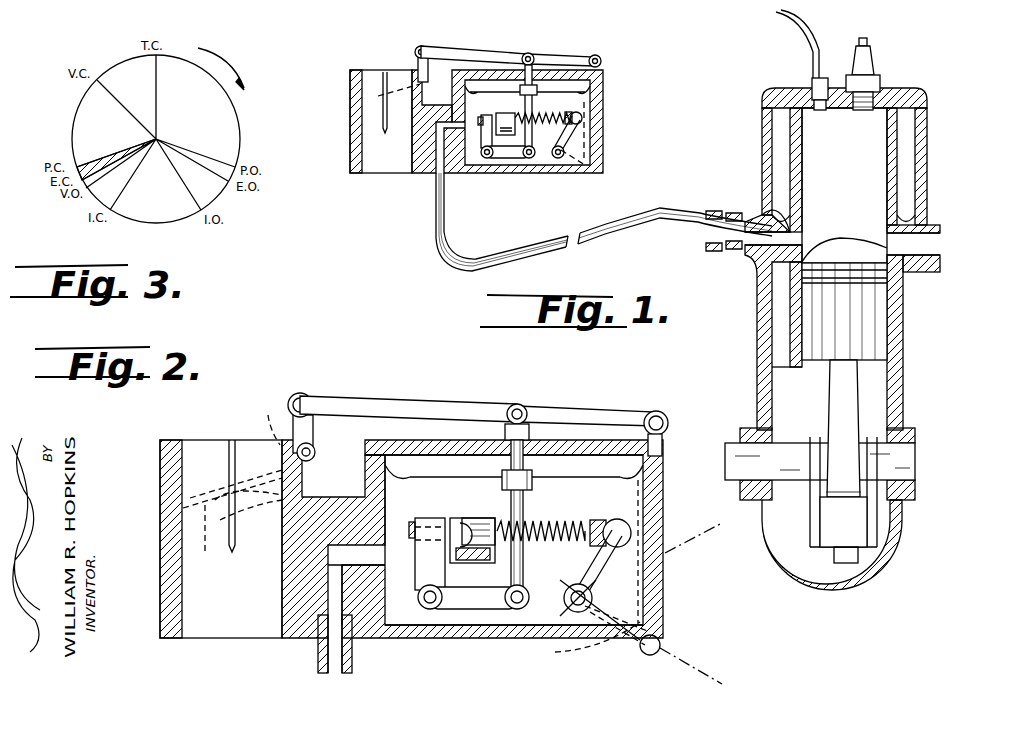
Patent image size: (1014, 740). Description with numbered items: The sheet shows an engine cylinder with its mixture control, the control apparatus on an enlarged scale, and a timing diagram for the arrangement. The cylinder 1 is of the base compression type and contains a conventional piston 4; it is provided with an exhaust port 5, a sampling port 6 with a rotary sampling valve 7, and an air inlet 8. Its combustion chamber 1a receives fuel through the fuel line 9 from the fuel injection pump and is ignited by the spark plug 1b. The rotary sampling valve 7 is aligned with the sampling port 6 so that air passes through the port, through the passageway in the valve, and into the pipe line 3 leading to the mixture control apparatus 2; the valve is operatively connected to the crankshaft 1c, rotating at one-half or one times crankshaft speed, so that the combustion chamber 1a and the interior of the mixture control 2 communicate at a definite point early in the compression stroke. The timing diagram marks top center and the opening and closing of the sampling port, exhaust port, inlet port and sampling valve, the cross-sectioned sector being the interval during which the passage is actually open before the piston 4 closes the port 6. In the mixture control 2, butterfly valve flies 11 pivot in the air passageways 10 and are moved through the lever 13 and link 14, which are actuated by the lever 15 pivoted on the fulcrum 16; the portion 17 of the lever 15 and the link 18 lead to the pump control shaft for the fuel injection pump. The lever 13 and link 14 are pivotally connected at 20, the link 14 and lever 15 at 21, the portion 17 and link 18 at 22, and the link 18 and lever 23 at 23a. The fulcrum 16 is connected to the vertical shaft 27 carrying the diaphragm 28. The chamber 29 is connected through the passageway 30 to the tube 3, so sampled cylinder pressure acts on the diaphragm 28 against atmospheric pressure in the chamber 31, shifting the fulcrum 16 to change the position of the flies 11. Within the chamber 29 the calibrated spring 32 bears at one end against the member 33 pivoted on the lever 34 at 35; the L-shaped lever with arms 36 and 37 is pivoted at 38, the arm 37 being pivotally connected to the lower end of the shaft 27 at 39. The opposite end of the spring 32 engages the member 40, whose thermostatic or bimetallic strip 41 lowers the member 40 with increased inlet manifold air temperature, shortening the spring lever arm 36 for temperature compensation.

In FIG. 1, the cylinder 1 is at (895, 356).
In FIG. 1, the combustion chamber 1a is at (865, 135).
In FIG. 1, the spark plug 1b is at (872, 62).
In FIG. 1, the crankshaft 1c is at (737, 455).
In FIG. 1, the mixture control apparatus 2 is at (420, 158).
In FIG. 2, the mixture control apparatus 2 is at (292, 632).
In FIG. 1, the pipe line 3 is at (620, 228).
In FIG. 2, the pipe line 3 is at (336, 662).
In FIG. 1, the piston 4 is at (875, 306).
In FIG. 1, the exhaust port 5 is at (925, 242).
In FIG. 1, the sampling port 6 is at (758, 208).
In FIG. 1, the rotary sampling valve 7 is at (752, 246).
In FIG. 1, the air inlet 8 is at (765, 272).
In FIG. 1, the fuel line 9 is at (808, 52).
In FIG. 1, the air passageways 10 is at (368, 85).
In FIG. 2, the air passageways 10 is at (192, 448).
In FIG. 2, the butterfly valve flies 11 is at (238, 445).
In FIG. 2, the lever 13 is at (232, 456).
In FIG. 2, the link 14 is at (314, 436).
In FIG. 1, the lever 15 is at (480, 54).
In FIG. 2, the lever 15 is at (446, 400).
In FIG. 1, the fulcrum 16 is at (529, 53).
In FIG. 2, the fulcrum 16 is at (522, 404).
In FIG. 2, the portion of lever 17 is at (580, 408).
In FIG. 2, the link 18 is at (663, 440).
In FIG. 2, the pivotal connection 20 is at (312, 458).
In FIG. 1, the pivotal connection 21 is at (424, 46).
In FIG. 2, the pivotal connection 21 is at (308, 398).
In FIG. 1, the pivotal connection 22 is at (598, 56).
In FIG. 2, the pivotal connection 22 is at (658, 411).
In FIG. 2, the lever 23 is at (575, 612).
In FIG. 2, the pivotal connection 23a is at (650, 645).
In FIG. 1, the vertical shaft 27 is at (522, 102).
In FIG. 2, the vertical shaft 27 is at (530, 505).
In FIG. 2, the diaphragm 28 is at (560, 479).
In FIG. 2, the chamber 29 is at (400, 612).
In FIG. 2, the passageway 30 is at (340, 585).
In FIG. 2, the chamber 31 is at (420, 470).
In FIG. 1, the calibrated spring 32 is at (585, 123).
In FIG. 2, the calibrated spring 32 is at (562, 542).
In FIG. 2, the member 33 is at (596, 520).
In FIG. 2, the lever 34 is at (605, 566).
In FIG. 1, the pivot 35 is at (583, 116).
In FIG. 2, the pivot 35 is at (617, 530).
In FIG. 1, the arm 36 is at (481, 140).
In FIG. 2, the arm 36 is at (432, 568).
In FIG. 1, the arm 37 is at (503, 160).
In FIG. 2, the arm 37 is at (475, 610).
In FIG. 1, the pivot 38 is at (489, 160).
In FIG. 2, the pivot 38 is at (430, 610).
In FIG. 1, the pivotal connection 39 is at (534, 158).
In FIG. 2, the pivotal connection 39 is at (517, 610).
In FIG. 2, the member 40 is at (485, 518).
In FIG. 2, the thermostatic strip 41 is at (465, 540).